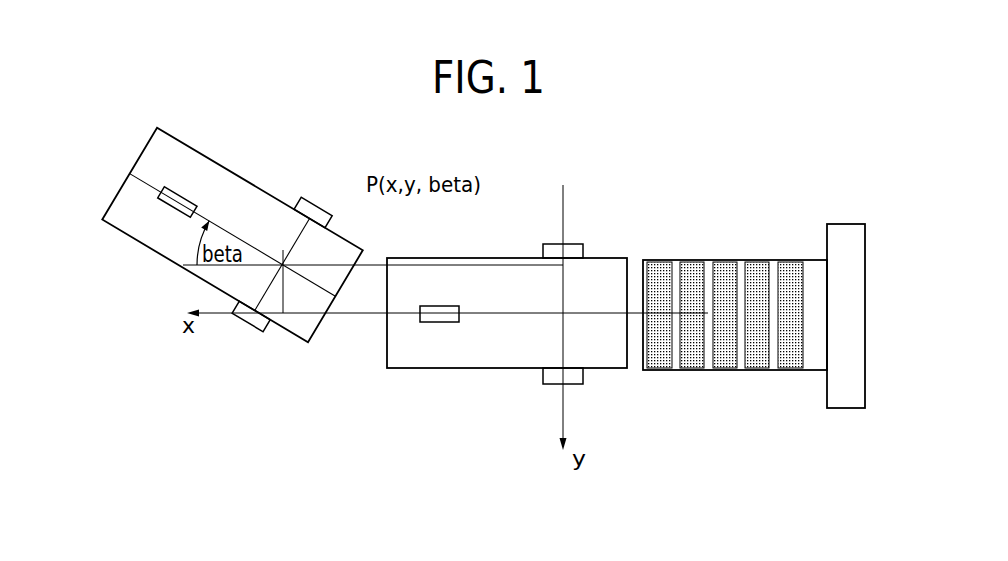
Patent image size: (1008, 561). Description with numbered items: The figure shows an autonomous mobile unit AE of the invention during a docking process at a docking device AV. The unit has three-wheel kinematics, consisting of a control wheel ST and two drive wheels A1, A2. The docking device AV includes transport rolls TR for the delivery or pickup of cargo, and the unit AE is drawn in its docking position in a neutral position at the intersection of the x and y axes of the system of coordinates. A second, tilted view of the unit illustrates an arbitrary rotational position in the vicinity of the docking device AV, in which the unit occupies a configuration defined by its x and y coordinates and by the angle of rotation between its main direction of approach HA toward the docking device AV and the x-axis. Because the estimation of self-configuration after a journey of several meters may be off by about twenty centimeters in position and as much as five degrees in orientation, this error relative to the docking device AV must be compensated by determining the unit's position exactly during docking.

The main direction of approach HA is at (147, 186).
The control wheel ST is at (181, 196).
The drive wheel A1 is at (318, 200).
The drive wheel A2 is at (247, 333).
The autonomous mobile unit AE is at (455, 368).
The transport rolls TR is at (730, 370).
The docking device AV is at (840, 224).